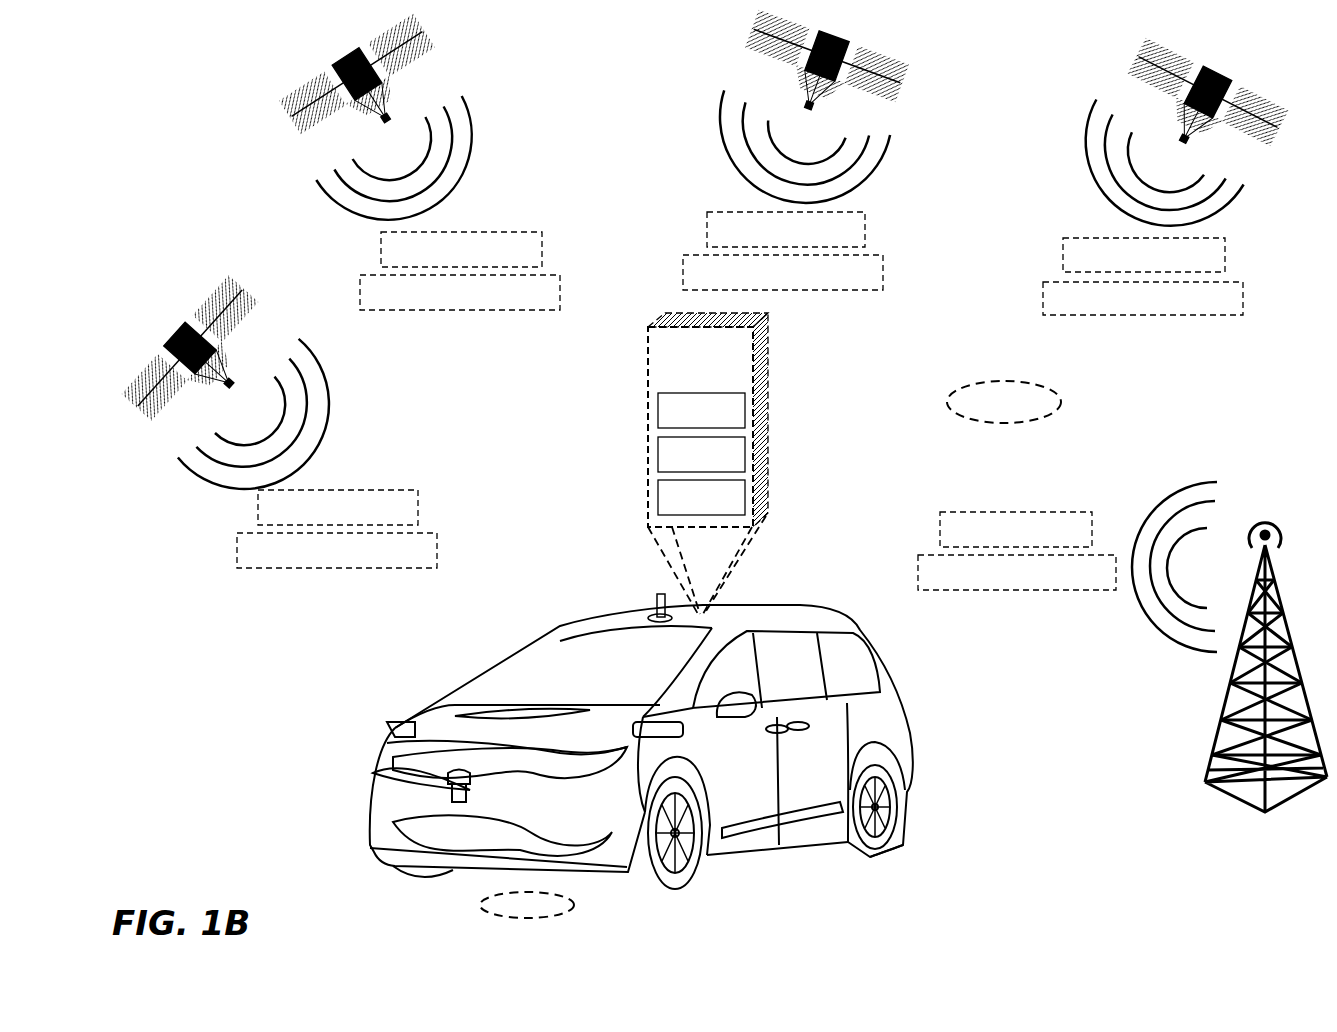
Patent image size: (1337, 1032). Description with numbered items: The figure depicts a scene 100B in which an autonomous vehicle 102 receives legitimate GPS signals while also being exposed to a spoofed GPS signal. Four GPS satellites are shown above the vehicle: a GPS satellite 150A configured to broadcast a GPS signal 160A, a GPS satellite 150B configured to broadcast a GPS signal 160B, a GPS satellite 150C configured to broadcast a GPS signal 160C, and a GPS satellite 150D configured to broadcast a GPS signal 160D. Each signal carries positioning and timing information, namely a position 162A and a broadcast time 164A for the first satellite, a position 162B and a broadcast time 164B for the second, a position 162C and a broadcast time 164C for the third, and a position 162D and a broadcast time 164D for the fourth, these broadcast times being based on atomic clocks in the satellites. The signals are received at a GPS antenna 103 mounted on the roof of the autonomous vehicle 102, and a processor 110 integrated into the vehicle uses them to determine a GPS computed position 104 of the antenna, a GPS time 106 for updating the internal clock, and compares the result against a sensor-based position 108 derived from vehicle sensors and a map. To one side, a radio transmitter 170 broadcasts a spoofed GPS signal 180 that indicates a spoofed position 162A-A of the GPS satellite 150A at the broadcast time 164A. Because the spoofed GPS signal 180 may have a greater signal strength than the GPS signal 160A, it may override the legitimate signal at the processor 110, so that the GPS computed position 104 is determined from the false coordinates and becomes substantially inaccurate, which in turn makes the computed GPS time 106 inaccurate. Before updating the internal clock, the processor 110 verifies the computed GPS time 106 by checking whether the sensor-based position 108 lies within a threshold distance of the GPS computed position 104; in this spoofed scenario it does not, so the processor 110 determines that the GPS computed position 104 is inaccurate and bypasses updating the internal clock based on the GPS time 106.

The scene 100B is at (212, 588).
The autonomous vehicle 102 is at (372, 796).
The GPS antenna 103 is at (652, 603).
The GPS computed position 104 is at (1042, 336).
The GPS time 106 is at (701, 454).
The sensor-based position 108 is at (418, 908).
The processor 110 is at (708, 463).
The GPS satellite 150A is at (180, 322).
The GPS satellite 150B is at (332, 68).
The GPS satellite 150C is at (852, 42).
The GPS satellite 150D is at (1232, 80).
The GPS signal 160A is at (178, 460).
The GPS signal 160B is at (316, 180).
The GPS signal 160C is at (724, 104).
The GPS signal 160D is at (1097, 112).
The position 162A is at (338, 507).
The position 162B is at (461, 249).
The position 162C is at (786, 229).
The position 162D is at (1144, 255).
The spoofed position 162A-A is at (1016, 529).
The broadcast time 164A is at (676, 561).
The broadcast time 164B is at (460, 292).
The broadcast time 164C is at (783, 272).
The broadcast time 164D is at (1143, 298).
The radio transmitter 170 is at (1212, 735).
The spoofed GPS signal 180 is at (1148, 614).